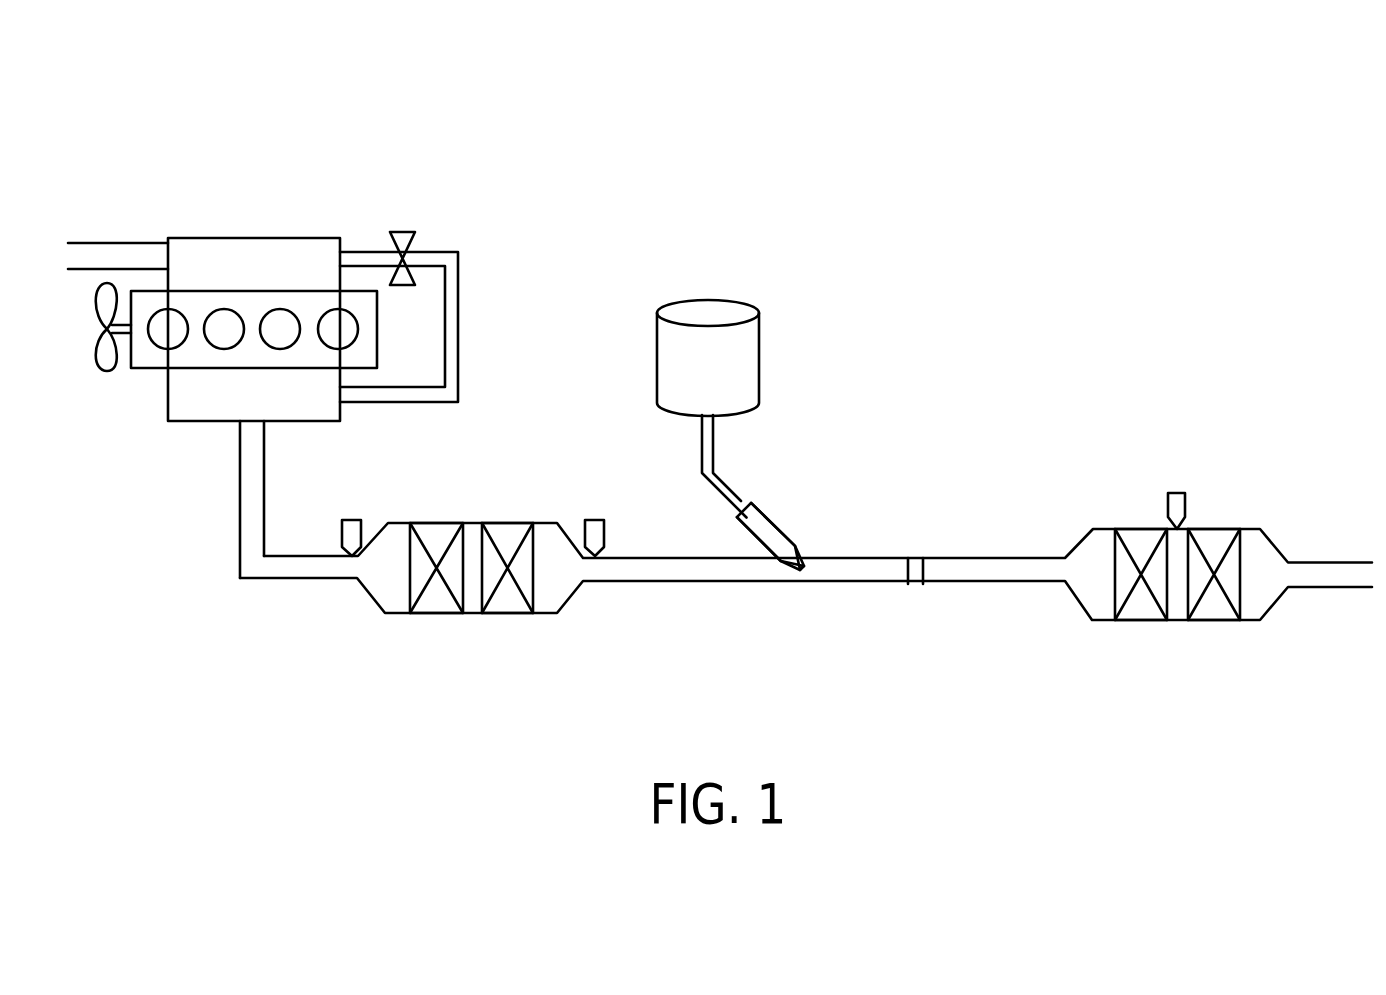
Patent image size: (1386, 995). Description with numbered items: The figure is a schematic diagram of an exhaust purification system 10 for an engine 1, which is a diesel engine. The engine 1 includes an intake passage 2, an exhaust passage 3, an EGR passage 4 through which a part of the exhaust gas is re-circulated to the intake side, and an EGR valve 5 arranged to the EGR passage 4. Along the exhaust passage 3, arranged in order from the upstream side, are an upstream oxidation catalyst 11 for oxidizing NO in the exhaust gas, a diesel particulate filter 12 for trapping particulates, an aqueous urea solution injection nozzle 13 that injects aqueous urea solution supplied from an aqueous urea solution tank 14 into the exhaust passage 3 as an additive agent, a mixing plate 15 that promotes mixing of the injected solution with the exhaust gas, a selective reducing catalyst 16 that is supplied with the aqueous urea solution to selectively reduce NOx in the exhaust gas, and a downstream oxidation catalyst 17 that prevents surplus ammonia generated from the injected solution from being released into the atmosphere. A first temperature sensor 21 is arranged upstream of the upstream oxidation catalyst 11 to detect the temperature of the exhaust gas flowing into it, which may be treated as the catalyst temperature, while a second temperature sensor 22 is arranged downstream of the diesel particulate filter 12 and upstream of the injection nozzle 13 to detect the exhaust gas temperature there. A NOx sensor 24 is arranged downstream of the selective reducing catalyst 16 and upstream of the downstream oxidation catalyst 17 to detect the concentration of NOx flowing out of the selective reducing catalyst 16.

The engine 1 is at (378, 334).
The intake passage 2 is at (113, 243).
The exhaust passage 3 is at (240, 489).
The EGR passage 4 is at (458, 334).
The EGR valve 5 is at (403, 232).
The exhaust purification system 10 is at (1033, 250).
The upstream oxidation catalyst 11 is at (437, 600).
The diesel particulate filter 12 is at (510, 600).
The aqueous urea solution injection nozzle 13 is at (762, 525).
The aqueous urea solution tank 14 is at (712, 312).
The mixing plate 15 is at (916, 558).
The selective reducing catalyst 16 is at (1140, 605).
The downstream oxidation catalyst 17 is at (1214, 605).
The first temperature sensor 21 is at (352, 518).
The second temperature sensor 22 is at (596, 518).
The NOx sensor 24 is at (1177, 492).